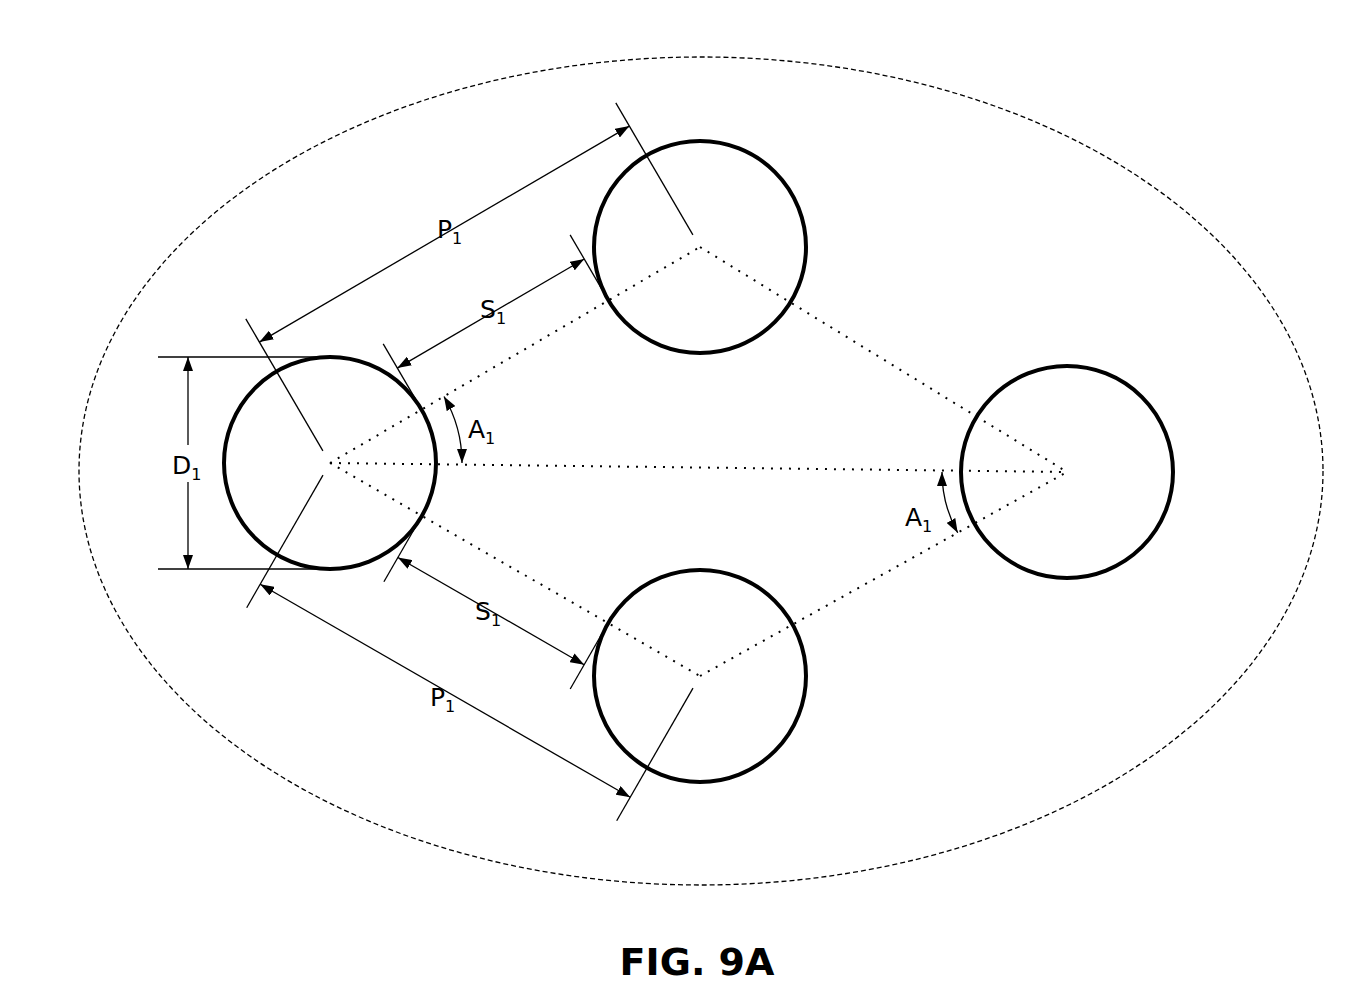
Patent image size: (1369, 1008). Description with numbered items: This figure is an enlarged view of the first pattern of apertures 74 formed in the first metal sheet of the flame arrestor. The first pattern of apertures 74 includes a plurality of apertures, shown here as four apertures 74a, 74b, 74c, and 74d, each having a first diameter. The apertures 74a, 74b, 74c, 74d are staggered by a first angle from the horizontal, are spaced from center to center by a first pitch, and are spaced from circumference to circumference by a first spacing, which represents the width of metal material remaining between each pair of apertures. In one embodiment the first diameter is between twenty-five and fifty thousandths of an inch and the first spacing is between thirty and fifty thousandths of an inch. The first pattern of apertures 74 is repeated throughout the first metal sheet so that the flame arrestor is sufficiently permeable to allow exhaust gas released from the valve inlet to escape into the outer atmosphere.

The first pattern of apertures 74 is at (217, 113).
The aperture 74a is at (364, 360).
The aperture 74b is at (757, 158).
The aperture 74c is at (772, 752).
The aperture 74d is at (1062, 366).